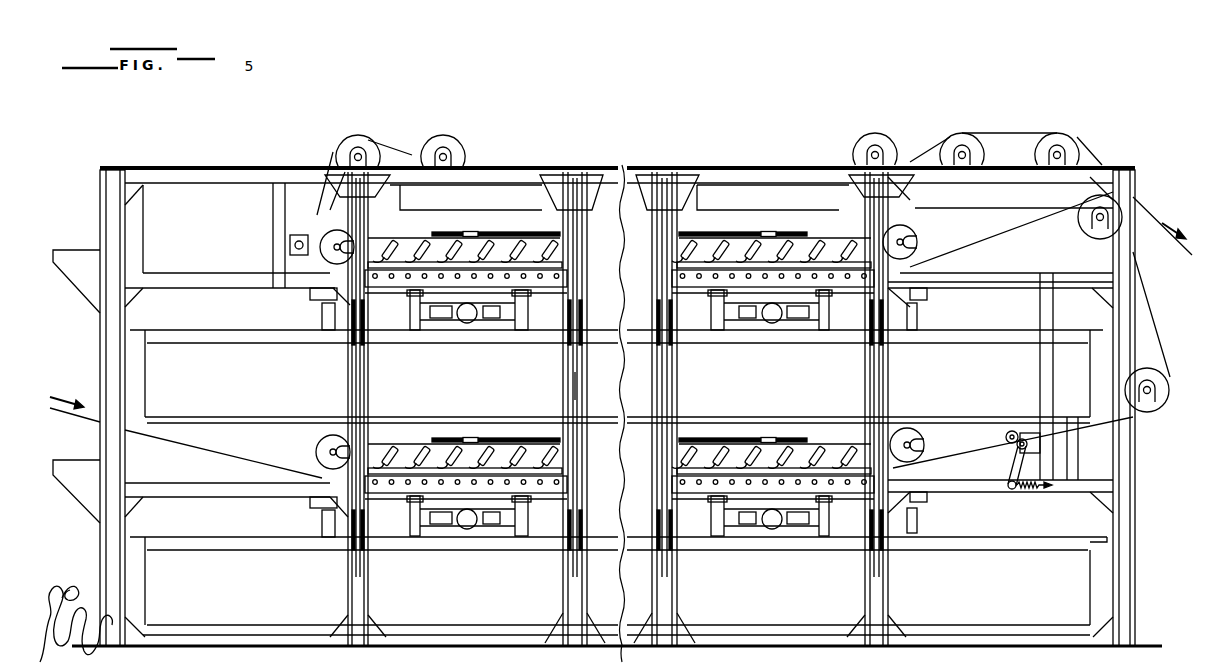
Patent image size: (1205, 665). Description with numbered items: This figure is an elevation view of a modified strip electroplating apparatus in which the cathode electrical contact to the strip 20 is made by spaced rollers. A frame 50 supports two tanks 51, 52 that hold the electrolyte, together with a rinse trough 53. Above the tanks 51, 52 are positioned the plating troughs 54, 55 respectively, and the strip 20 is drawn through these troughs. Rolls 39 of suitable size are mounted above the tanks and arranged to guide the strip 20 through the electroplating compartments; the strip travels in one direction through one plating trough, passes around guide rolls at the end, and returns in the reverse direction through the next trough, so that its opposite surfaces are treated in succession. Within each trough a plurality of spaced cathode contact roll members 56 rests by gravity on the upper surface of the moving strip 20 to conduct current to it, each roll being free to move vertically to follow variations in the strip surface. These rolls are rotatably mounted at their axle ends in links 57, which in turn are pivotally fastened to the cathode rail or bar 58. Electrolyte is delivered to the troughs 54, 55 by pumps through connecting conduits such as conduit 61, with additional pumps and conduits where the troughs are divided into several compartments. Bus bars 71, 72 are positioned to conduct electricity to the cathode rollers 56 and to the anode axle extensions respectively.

The strip 20 is at (182, 438).
The rolls 39 is at (345, 146).
The frame 50 is at (98, 345).
The tank 51 is at (280, 583).
The tank 52 is at (310, 381).
The rinse trough 53 is at (467, 203).
The trough 54 is at (406, 500).
The trough 55 is at (403, 293).
The cathode contact roll members 56 is at (404, 248).
The links 57 is at (450, 259).
The cathode rail or bar 58 is at (511, 239).
The connecting conduit 61 is at (468, 324).
The bus bar 71 is at (739, 436).
The bus bar 72 is at (562, 385).